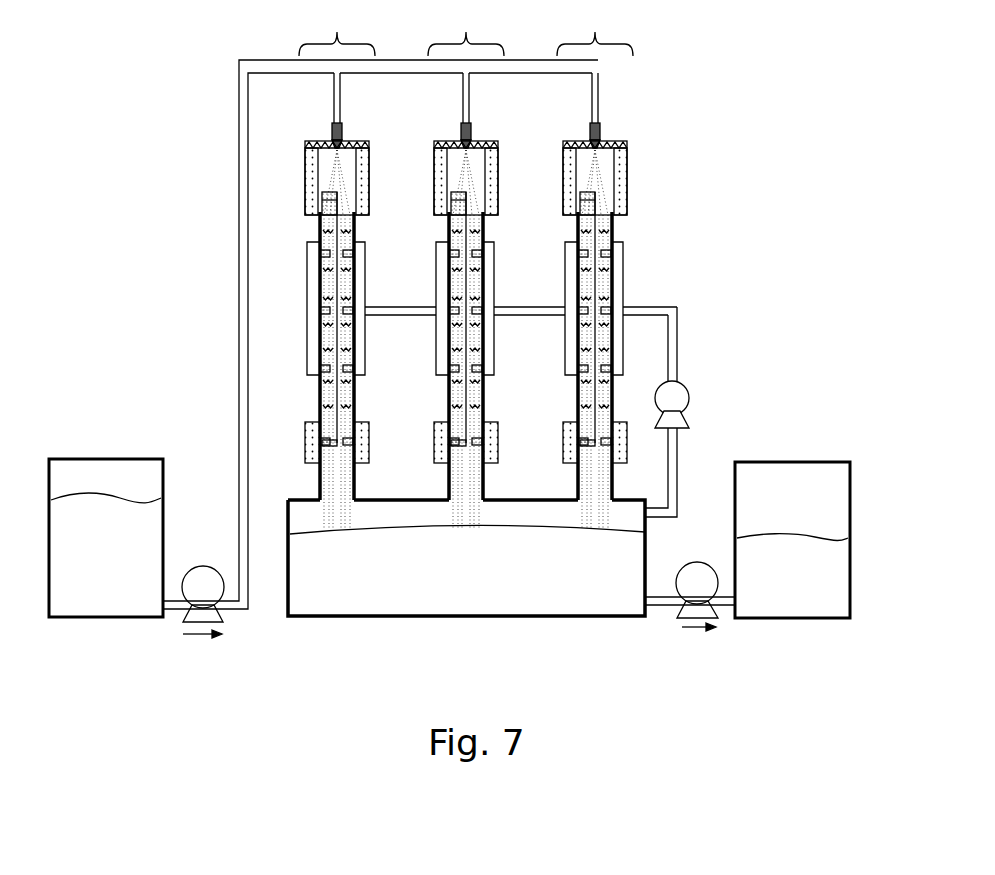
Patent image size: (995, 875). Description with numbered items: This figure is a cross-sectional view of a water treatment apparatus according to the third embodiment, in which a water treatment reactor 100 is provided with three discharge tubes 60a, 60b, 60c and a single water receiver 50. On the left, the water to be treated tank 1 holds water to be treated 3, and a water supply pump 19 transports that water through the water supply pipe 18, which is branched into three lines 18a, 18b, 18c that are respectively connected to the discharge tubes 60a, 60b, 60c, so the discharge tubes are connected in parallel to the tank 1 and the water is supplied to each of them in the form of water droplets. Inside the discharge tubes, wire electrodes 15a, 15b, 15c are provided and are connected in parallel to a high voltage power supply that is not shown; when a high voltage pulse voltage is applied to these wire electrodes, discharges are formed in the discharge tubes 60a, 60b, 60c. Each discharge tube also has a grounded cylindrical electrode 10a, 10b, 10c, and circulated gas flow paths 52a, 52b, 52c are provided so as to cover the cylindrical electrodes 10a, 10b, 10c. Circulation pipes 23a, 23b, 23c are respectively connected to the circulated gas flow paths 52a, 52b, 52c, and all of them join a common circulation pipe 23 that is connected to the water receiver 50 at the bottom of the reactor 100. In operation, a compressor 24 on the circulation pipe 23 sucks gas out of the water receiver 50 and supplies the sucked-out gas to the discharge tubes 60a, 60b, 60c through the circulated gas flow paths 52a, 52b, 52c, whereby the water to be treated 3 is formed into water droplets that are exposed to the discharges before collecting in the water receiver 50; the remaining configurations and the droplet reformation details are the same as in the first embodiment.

The water to be treated tank 1 is at (100, 458).
The water to be treated 3 is at (150, 522).
The water supply pump 19 is at (204, 566).
The water supply pipe 18 is at (239, 300).
The water supply pipe branch line 18a is at (334, 108).
The water supply pipe branch line 18b is at (463, 108).
The water supply pipe branch line 18c is at (592, 108).
The discharge tube 60a is at (352, 27).
The discharge tube 60b is at (481, 27).
The discharge tube 60c is at (610, 27).
The wire electrode 15a is at (322, 210).
The wire electrode 15b is at (451, 210).
The wire electrode 15c is at (580, 210).
The circulated gas flow path 52a is at (307, 284).
The circulated gas flow path 52b is at (436, 284).
The circulated gas flow path 52c is at (565, 284).
The cylindrical electrode 10a is at (320, 410).
The cylindrical electrode 10b is at (449, 410).
The cylindrical electrode 10c is at (578, 410).
The circulation pipe 23a is at (386, 317).
The circulation pipe 23b is at (515, 317).
The circulation pipe 23c is at (636, 319).
The circulation pipe 23 is at (677, 355).
The compressor 24 is at (689, 400).
The water treatment reactor 100 is at (657, 625).
The water receiver 50 is at (647, 560).